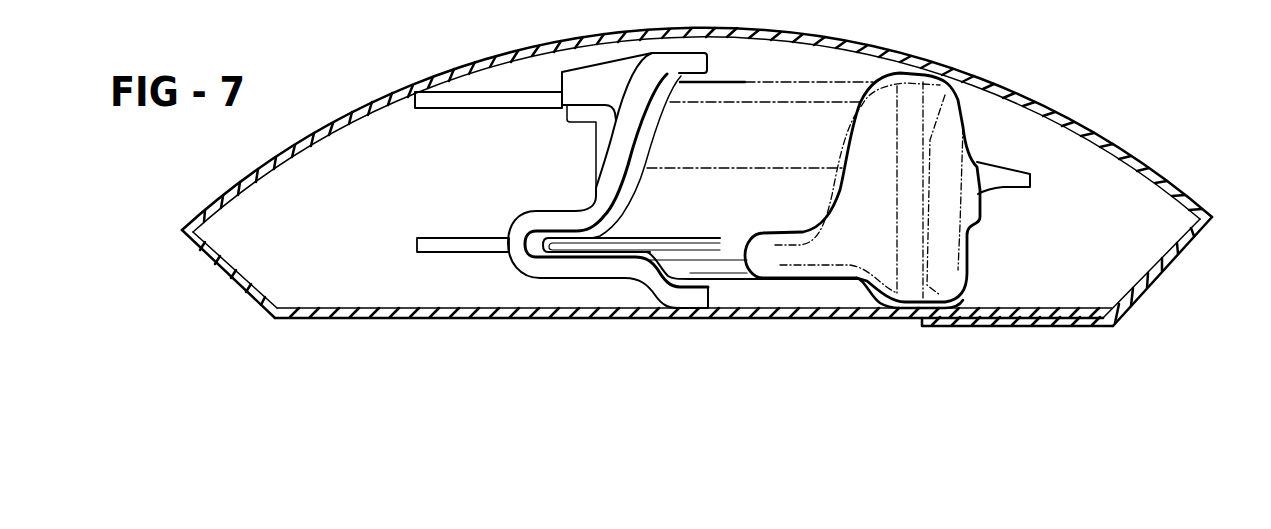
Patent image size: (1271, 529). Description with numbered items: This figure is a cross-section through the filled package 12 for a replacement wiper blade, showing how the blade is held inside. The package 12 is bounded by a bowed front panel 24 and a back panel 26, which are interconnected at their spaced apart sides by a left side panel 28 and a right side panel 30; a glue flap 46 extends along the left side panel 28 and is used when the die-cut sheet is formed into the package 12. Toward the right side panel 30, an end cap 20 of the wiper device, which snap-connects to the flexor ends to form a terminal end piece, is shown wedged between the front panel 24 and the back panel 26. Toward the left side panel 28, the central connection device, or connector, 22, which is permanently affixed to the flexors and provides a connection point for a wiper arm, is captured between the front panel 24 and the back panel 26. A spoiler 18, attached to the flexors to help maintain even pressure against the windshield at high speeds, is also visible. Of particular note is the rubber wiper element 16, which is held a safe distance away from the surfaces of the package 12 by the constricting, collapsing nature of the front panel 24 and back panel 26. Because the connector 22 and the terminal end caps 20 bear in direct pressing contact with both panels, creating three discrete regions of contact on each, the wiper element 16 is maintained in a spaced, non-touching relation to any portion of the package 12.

The package 12 is at (1052, 89).
The wiper element 16 is at (1030, 176).
The spoiler 18 is at (720, 244).
The end cap 20 is at (890, 290).
The central connection device 22 is at (412, 238).
The front panel 24 is at (298, 140).
The back panel 26 is at (518, 319).
The left side panel 28 is at (1162, 277).
The right side panel 30 is at (220, 263).
The glue flap 46 is at (983, 327).